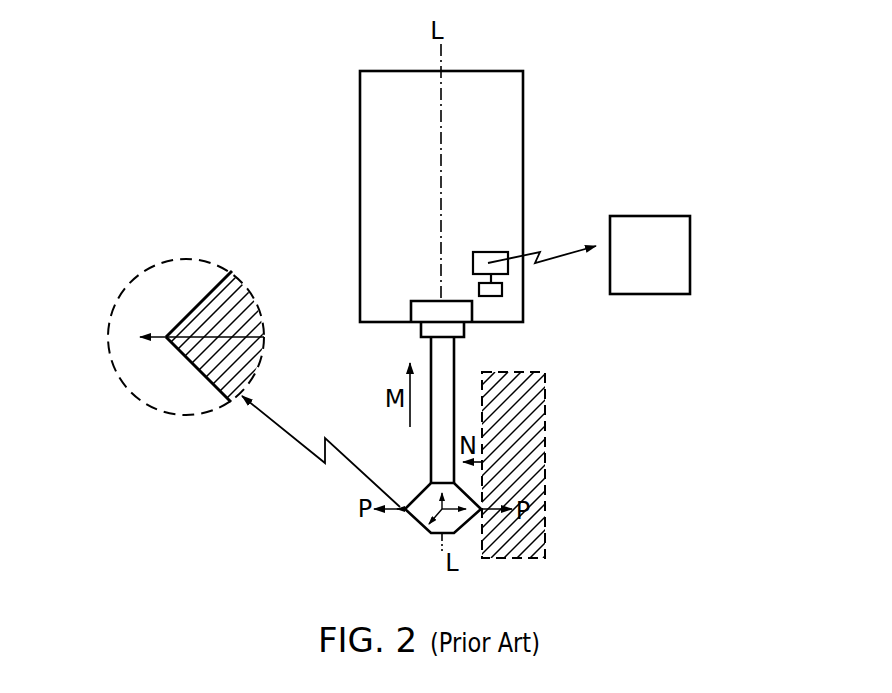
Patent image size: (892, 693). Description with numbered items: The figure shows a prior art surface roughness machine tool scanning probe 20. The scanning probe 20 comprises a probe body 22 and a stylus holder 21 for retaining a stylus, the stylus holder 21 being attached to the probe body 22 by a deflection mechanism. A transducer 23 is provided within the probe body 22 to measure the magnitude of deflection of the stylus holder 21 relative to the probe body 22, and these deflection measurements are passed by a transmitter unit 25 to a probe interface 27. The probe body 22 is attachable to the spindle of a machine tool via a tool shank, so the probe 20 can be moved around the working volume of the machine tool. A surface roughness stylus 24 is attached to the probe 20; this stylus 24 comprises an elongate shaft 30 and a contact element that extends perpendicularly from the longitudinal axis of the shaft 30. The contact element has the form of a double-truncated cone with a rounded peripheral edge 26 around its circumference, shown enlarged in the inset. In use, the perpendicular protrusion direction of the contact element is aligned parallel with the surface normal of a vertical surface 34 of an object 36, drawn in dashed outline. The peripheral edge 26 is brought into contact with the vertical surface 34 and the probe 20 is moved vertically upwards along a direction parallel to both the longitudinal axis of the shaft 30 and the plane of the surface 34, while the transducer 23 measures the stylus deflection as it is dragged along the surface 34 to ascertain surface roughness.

The scanning probe 20 is at (644, 123).
The stylus holder 21 is at (477, 313).
The probe body 22 is at (523, 150).
The transducer 23 is at (479, 291).
The surface roughness stylus 24 is at (462, 448).
The transmitter unit 25 is at (482, 257).
The rounded peripheral edge 26 is at (196, 333).
The probe interface 27 is at (633, 268).
The elongate shaft 30 is at (431, 442).
The vertical surface 34 is at (482, 412).
The object 36 is at (537, 424).